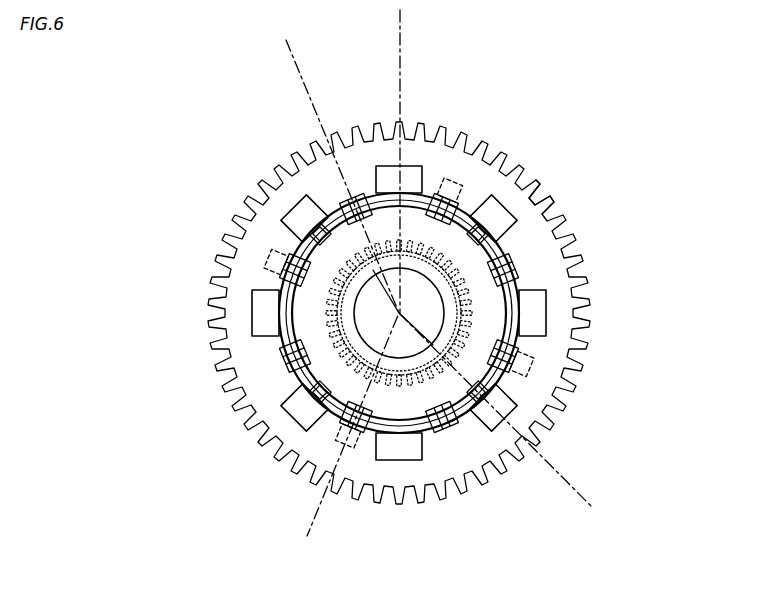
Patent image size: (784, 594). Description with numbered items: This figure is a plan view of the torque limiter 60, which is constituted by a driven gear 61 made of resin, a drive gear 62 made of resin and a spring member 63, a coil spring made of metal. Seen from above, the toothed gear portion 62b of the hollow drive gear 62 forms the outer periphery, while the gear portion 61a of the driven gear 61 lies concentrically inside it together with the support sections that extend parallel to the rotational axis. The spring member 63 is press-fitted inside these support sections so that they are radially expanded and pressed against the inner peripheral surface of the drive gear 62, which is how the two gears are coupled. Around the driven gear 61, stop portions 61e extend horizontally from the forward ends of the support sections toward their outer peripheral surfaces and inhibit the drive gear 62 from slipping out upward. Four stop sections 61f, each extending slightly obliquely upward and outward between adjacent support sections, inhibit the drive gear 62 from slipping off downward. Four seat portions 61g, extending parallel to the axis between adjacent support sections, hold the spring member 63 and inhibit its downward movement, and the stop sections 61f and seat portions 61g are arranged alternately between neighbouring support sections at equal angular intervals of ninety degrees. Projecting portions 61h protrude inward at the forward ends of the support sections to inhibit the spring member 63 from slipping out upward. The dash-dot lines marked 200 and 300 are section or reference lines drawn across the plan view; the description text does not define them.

The torque limiter 60 is at (116, 126).
The driven gear 61 is at (478, 290).
The gear portion 61a is at (399, 313).
The stop portions 61e is at (395, 165).
The stop sections 61f is at (452, 182).
The seat portions 61g is at (345, 205).
The projecting portions 61h is at (489, 218).
The drive gear 62 is at (462, 163).
The gear portion 62b is at (560, 200).
The spring member 63 is at (287, 262).
The axis line 200 is at (404, 15).
The axis line 300 is at (288, 34).